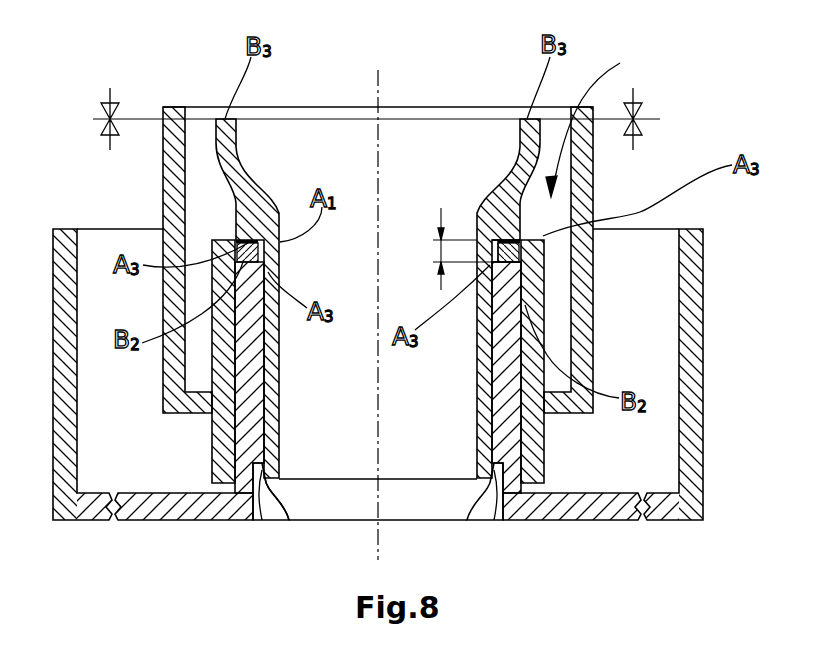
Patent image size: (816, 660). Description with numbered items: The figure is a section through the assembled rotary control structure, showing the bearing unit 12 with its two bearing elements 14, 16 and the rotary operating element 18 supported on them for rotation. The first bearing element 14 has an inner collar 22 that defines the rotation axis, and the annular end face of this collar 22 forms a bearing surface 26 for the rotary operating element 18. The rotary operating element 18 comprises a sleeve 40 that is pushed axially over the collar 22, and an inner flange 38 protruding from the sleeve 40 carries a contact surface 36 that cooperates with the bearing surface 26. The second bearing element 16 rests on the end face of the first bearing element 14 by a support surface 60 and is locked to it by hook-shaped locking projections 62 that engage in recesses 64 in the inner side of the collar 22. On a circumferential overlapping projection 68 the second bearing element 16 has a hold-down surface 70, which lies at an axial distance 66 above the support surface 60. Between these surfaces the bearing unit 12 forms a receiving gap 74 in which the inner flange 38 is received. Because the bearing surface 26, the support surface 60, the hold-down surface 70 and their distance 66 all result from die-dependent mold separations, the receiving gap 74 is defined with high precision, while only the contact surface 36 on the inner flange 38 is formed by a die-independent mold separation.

The bearing unit 12 is at (598, 118).
The first bearing element 14 is at (557, 537).
The second bearing element 16 is at (505, 193).
The rotary operating element 18 is at (597, 360).
The collar 22 is at (510, 400).
The bearing surface 26 is at (477, 237).
The contact surface 36 is at (533, 316).
The inner flange 38 is at (545, 239).
The sleeve 40 is at (533, 445).
The support surface 60 is at (500, 262).
The hook-shaped locking projections 62 is at (290, 520).
The recesses 64 is at (263, 520).
The axial distance 66 is at (441, 252).
The circumferential overlapping projection 68 is at (530, 228).
The hold-down surface 70 is at (512, 240).
The receiving gap 74 is at (513, 228).